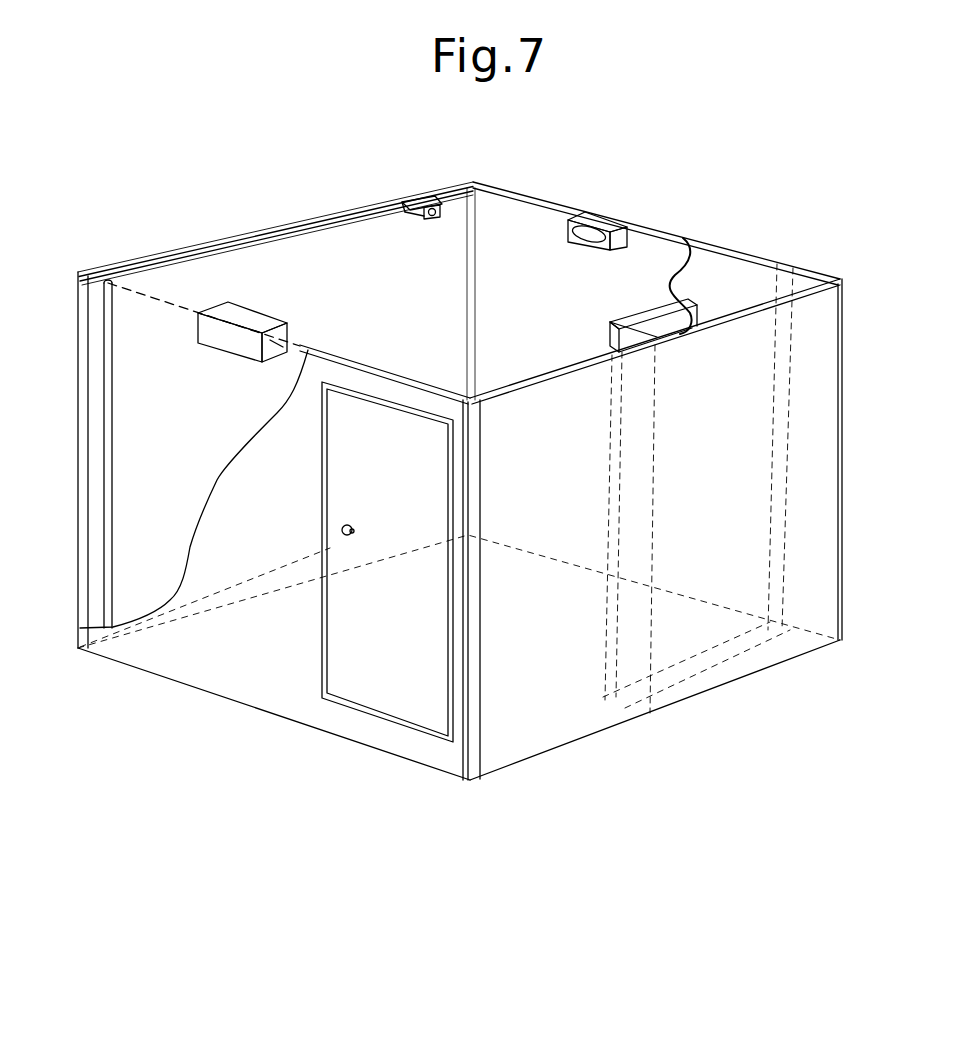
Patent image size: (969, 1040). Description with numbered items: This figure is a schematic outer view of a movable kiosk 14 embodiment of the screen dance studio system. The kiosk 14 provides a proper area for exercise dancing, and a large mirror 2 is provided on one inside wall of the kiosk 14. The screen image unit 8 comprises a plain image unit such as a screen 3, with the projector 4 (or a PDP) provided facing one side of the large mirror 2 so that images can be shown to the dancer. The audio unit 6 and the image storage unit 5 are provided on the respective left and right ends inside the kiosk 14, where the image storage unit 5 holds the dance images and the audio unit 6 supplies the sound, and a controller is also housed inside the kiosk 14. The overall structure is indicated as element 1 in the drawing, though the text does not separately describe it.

The booth / room structure 1 is at (257, 668).
The large mirror 2 is at (242, 275).
The screen 3 is at (736, 511).
The projector 4 is at (427, 197).
The image storage unit 5 is at (222, 340).
The audio unit 6 is at (602, 220).
The screen image unit 8 is at (643, 324).
The kiosk 14 is at (538, 734).